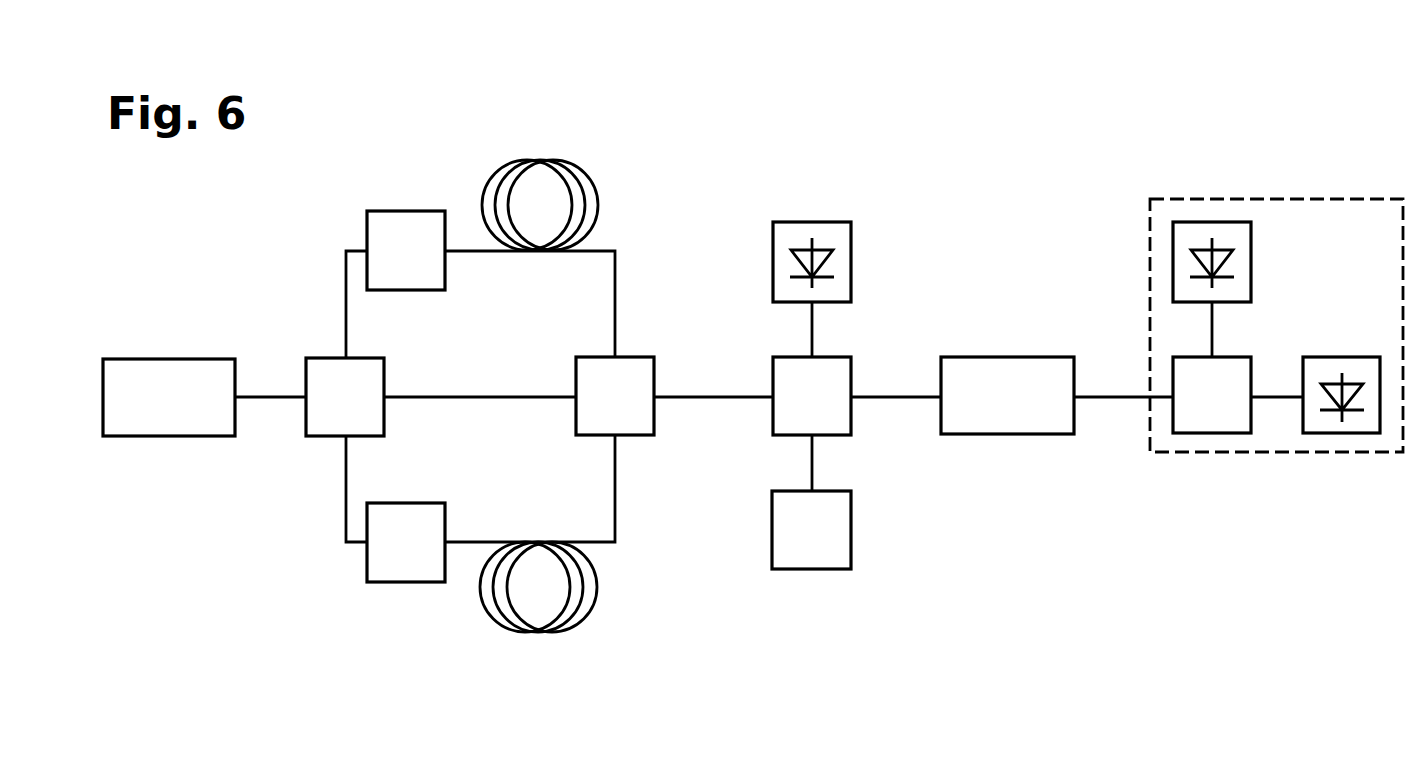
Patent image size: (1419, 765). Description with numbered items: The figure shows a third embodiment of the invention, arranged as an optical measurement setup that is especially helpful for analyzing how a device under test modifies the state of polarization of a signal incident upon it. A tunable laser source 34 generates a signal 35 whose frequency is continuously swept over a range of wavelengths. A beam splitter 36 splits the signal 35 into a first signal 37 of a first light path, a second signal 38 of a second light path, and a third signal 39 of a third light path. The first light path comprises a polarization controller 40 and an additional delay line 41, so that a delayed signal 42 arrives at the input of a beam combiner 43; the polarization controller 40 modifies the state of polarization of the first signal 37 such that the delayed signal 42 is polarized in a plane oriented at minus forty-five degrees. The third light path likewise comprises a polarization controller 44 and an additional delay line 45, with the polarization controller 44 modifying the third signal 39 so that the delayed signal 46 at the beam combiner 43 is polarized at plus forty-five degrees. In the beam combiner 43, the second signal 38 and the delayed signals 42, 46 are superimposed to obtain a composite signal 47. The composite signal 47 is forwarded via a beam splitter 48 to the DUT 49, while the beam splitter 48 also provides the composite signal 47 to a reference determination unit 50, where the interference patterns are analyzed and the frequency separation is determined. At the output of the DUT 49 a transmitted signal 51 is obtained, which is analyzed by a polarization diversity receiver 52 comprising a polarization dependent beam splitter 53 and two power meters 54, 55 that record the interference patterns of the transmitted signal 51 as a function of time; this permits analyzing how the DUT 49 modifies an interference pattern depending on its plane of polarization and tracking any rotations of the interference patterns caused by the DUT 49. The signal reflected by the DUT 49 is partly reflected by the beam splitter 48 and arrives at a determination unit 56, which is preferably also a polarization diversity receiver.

The tunable laser source 34 is at (161, 420).
The signal 35 is at (272, 394).
The beam splitter 36 is at (318, 420).
The first signal 37 is at (343, 288).
The second signal 38 is at (481, 394).
The third signal 39 is at (344, 508).
The polarization controller 40 is at (407, 225).
The additional delay line 41 is at (590, 192).
The delayed signal 42 is at (618, 288).
The beam combiner 43 is at (630, 420).
The polarization controller 44 is at (408, 573).
The additional delay line 45 is at (590, 597).
The delayed signal 46 is at (617, 505).
The composite signal 47 is at (704, 394).
The beam splitter 48 is at (838, 415).
The DUT 49 is at (1010, 420).
The reference determination unit 50 is at (812, 225).
The transmitted signal 51 is at (1097, 394).
The polarization diversity receiver 52 is at (1272, 445).
The polarization dependent beam splitter 53 is at (1210, 425).
The power meter 54 is at (1350, 425).
The power meter 55 is at (1213, 225).
The determination unit 56 is at (814, 562).